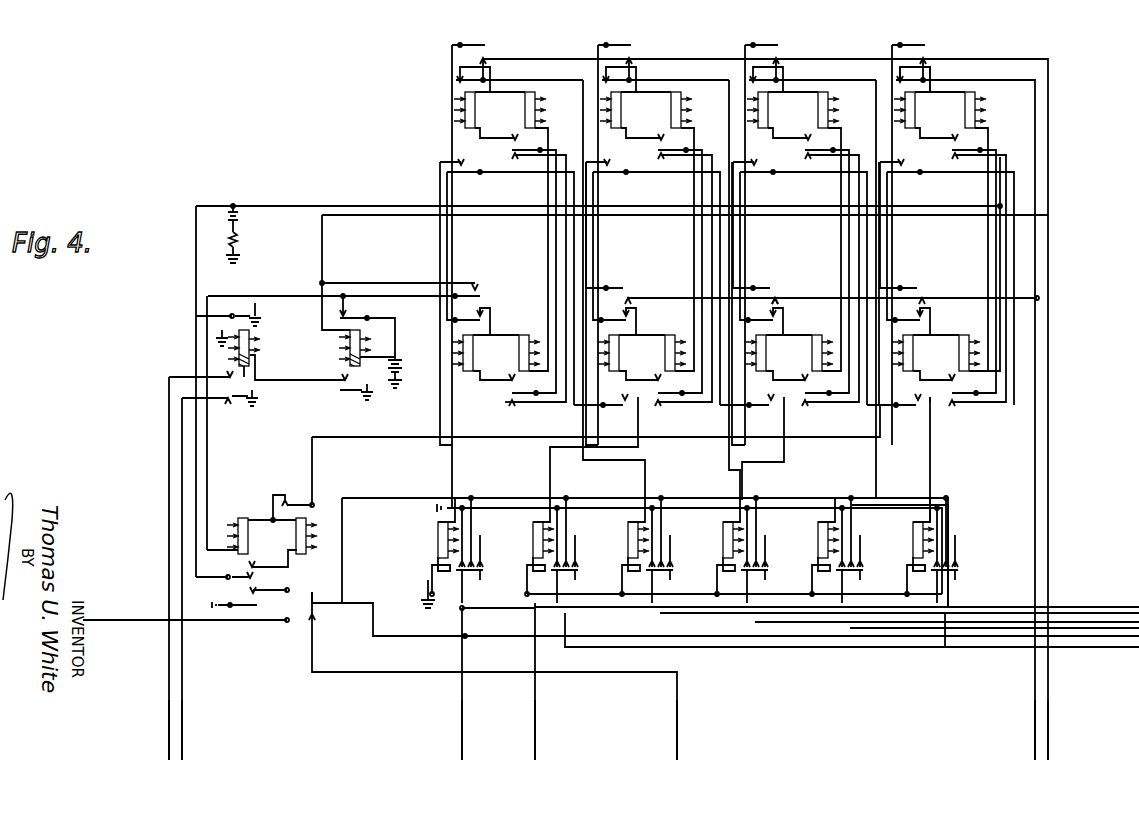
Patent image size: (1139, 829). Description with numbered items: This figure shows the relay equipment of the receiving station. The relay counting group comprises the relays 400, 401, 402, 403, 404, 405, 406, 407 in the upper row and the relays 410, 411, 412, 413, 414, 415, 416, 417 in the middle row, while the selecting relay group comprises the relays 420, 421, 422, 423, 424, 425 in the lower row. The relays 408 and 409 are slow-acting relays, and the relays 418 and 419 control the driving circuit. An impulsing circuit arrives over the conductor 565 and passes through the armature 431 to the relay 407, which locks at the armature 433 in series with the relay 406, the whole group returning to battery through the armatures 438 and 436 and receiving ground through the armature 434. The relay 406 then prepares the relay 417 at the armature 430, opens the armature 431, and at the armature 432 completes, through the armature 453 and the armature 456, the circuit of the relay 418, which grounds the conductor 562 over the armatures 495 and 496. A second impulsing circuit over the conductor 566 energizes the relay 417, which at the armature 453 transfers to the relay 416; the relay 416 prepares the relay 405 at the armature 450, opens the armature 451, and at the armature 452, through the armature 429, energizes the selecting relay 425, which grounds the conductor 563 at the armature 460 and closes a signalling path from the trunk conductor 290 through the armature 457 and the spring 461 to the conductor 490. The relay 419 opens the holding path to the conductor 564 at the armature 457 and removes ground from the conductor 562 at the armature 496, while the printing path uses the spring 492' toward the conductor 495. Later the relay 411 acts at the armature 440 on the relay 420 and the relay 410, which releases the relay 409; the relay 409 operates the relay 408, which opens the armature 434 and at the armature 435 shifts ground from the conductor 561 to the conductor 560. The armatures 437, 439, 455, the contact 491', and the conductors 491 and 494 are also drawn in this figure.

The counting relay 400 is at (485, 110).
The counting relay 401 is at (551, 110).
The counting relay 402 is at (631, 110).
The counting relay 403 is at (697, 110).
The counting relay 404 is at (778, 110).
The counting relay 405 is at (844, 110).
The counting relay 406 is at (924, 110).
The counting relay 407 is at (991, 110).
The slow-acting relay 408 is at (259, 348).
The slow-acting relay 409 is at (348, 357).
The counting relay 410 is at (481, 353).
The counting relay 411 is at (520, 330).
The counting relay 412 is at (629, 353).
The counting relay 413 is at (668, 332).
The counting relay 414 is at (774, 353).
The counting relay 415 is at (815, 332).
The counting relay 416 is at (923, 353).
The counting relay 417 is at (962, 332).
The relay 418 is at (243, 516).
The relay 419 is at (296, 556).
The selecting relay 420 is at (437, 528).
The selecting relay 421 is at (532, 525).
The selecting relay 422 is at (627, 528).
The selecting relay 423 is at (722, 532).
The selecting relay 424 is at (817, 532).
The selecting relay 425 is at (912, 532).
The armature 429 is at (815, 153).
The armature 430 is at (928, 47).
The armature 431 is at (922, 80).
The armature 432 is at (912, 176).
The armature 433 is at (978, 155).
The armature 434 is at (248, 312).
The armature 435 is at (240, 400).
The armature 436 is at (358, 314).
The armature 437 is at (348, 393).
The armature 438 is at (474, 283).
The armature 439 is at (482, 308).
The armature 440 is at (506, 400).
The armature 450 is at (905, 288).
The armature 451 is at (922, 310).
The armature 452 is at (905, 412).
The armature 453 is at (932, 404).
The armature 455 is at (242, 573).
The armature 456 is at (295, 483).
The armature 457 is at (300, 598).
The armature 460 is at (935, 575).
The spring 461 is at (950, 574).
The conductor 490 is at (1072, 605).
The conductor 491 is at (1099, 598).
The armature 491' is at (427, 574).
The contact 492' is at (490, 578).
The conductor 494 is at (1120, 640).
The conductor 495 is at (235, 624).
The armature 496 is at (315, 592).
The trunk conductor 290 is at (110, 620).
The conductor 560 is at (169, 718).
The conductor 561 is at (182, 738).
The conductor 562 is at (462, 730).
The conductor 563 is at (535, 732).
The conductor 564 is at (677, 730).
The conductor 565 is at (1033, 745).
The conductor 566 is at (1048, 755).